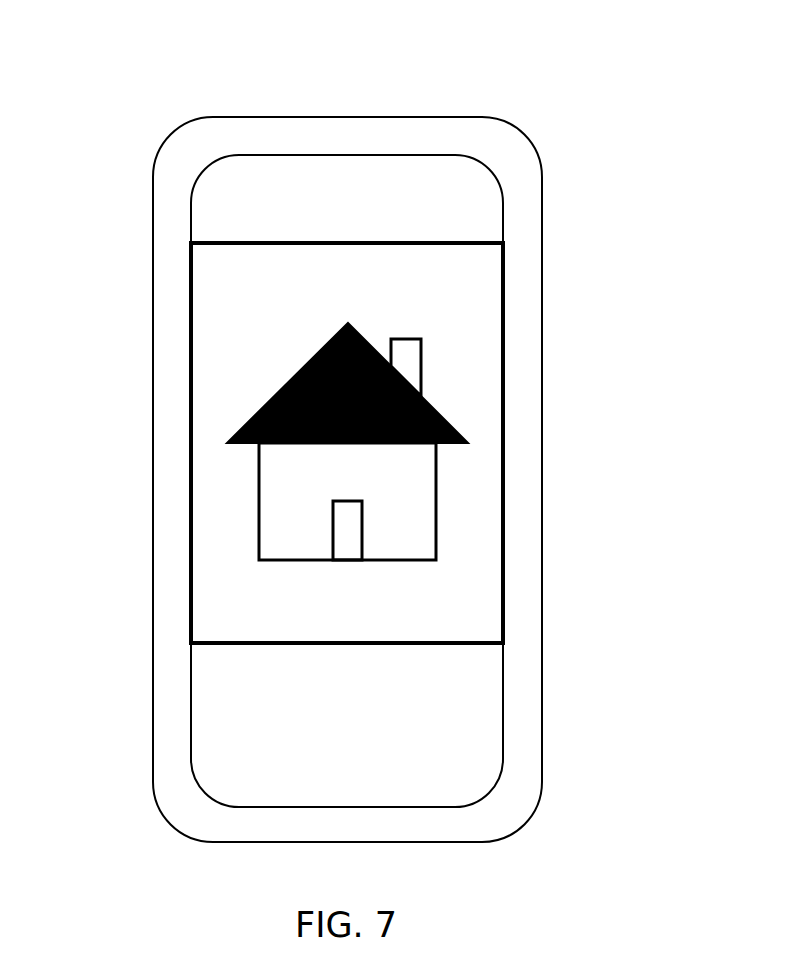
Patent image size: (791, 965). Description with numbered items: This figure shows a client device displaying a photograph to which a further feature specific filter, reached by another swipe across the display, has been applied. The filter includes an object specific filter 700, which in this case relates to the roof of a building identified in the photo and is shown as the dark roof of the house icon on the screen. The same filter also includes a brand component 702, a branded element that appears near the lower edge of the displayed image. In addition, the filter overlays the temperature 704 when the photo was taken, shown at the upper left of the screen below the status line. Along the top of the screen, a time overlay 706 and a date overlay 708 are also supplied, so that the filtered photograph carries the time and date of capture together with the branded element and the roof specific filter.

The object specific filter 700 is at (428, 403).
The brand component 702 is at (488, 618).
The temperature 704 is at (202, 335).
The time overlay 706 is at (241, 243).
The date overlay 708 is at (441, 243).